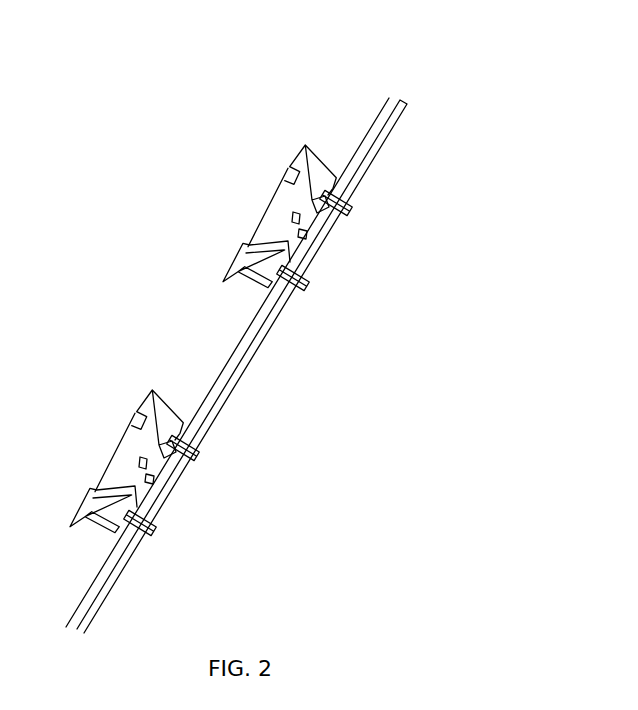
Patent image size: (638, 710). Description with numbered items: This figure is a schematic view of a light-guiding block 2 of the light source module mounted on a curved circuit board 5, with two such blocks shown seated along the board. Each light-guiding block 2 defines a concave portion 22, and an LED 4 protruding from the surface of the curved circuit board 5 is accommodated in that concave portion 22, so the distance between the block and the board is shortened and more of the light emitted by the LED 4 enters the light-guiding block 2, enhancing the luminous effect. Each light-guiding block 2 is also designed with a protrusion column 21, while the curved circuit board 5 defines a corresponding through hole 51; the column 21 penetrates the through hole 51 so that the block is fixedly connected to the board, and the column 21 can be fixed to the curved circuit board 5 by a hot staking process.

The light-guiding block 2 is at (316, 160).
The curved circuit board 5 is at (404, 103).
The protrusion column 21 is at (349, 206).
The concave portion 22 is at (291, 213).
The light-emitting diode 4 is at (306, 237).
The through hole 51 is at (301, 285).